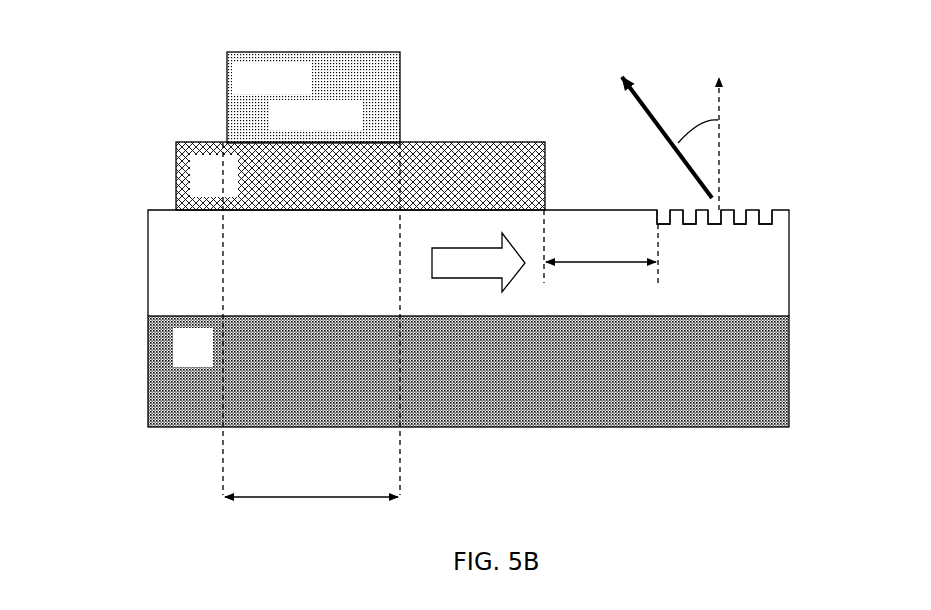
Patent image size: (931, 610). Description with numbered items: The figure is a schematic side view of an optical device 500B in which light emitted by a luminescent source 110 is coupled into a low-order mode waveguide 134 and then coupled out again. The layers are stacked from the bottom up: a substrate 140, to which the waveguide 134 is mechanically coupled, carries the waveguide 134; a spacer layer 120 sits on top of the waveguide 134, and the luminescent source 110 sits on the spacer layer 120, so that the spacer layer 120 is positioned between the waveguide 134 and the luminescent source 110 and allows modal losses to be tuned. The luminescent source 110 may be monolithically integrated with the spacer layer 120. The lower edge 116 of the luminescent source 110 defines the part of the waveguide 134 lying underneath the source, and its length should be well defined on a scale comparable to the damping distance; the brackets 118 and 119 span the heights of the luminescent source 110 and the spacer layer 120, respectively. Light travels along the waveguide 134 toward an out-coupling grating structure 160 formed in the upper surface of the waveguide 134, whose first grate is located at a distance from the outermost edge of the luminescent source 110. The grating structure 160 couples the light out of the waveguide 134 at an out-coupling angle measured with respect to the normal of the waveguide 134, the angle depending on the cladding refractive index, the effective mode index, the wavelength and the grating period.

The luminescent source 110 is at (222, 80).
The lower edge 116 is at (397, 126).
The light source thickness 118 is at (404, 57).
The spacer layer thickness 119 is at (547, 145).
The spacer layer 120 is at (174, 187).
The waveguide 134 is at (146, 268).
The substrate 140 is at (146, 337).
The out-coupling grating structure 160 is at (765, 226).
The optical device 500B is at (762, 20).